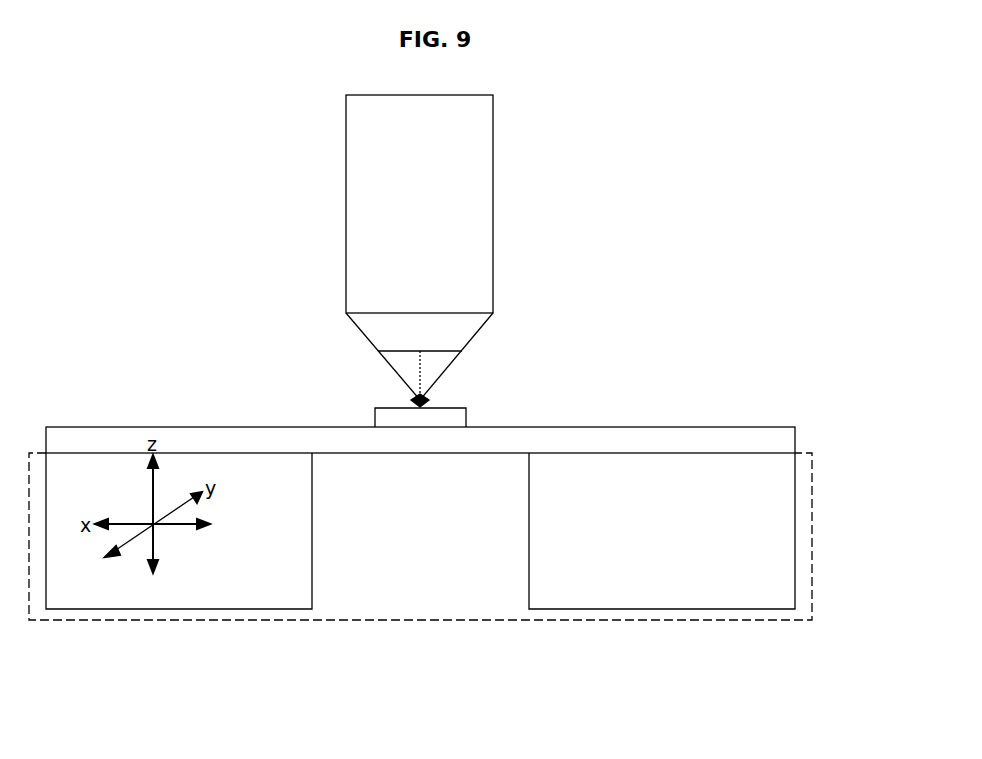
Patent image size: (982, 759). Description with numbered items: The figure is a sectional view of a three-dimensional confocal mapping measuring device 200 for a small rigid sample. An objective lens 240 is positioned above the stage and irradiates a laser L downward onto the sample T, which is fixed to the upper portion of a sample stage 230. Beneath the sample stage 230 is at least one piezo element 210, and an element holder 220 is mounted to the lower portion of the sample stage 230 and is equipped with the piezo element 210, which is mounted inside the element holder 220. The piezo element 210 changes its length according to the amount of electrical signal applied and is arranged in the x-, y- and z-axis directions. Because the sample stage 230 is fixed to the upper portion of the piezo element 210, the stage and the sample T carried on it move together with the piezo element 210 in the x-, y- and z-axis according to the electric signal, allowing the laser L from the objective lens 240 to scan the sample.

The three-dimensional confocal mapping measuring device 200 is at (620, 171).
The objective lens 240 is at (478, 187).
The laser L is at (446, 373).
The sample T is at (385, 413).
The sample stage 230 is at (690, 440).
The piezo element 210 is at (690, 597).
The element holder 220 is at (812, 548).